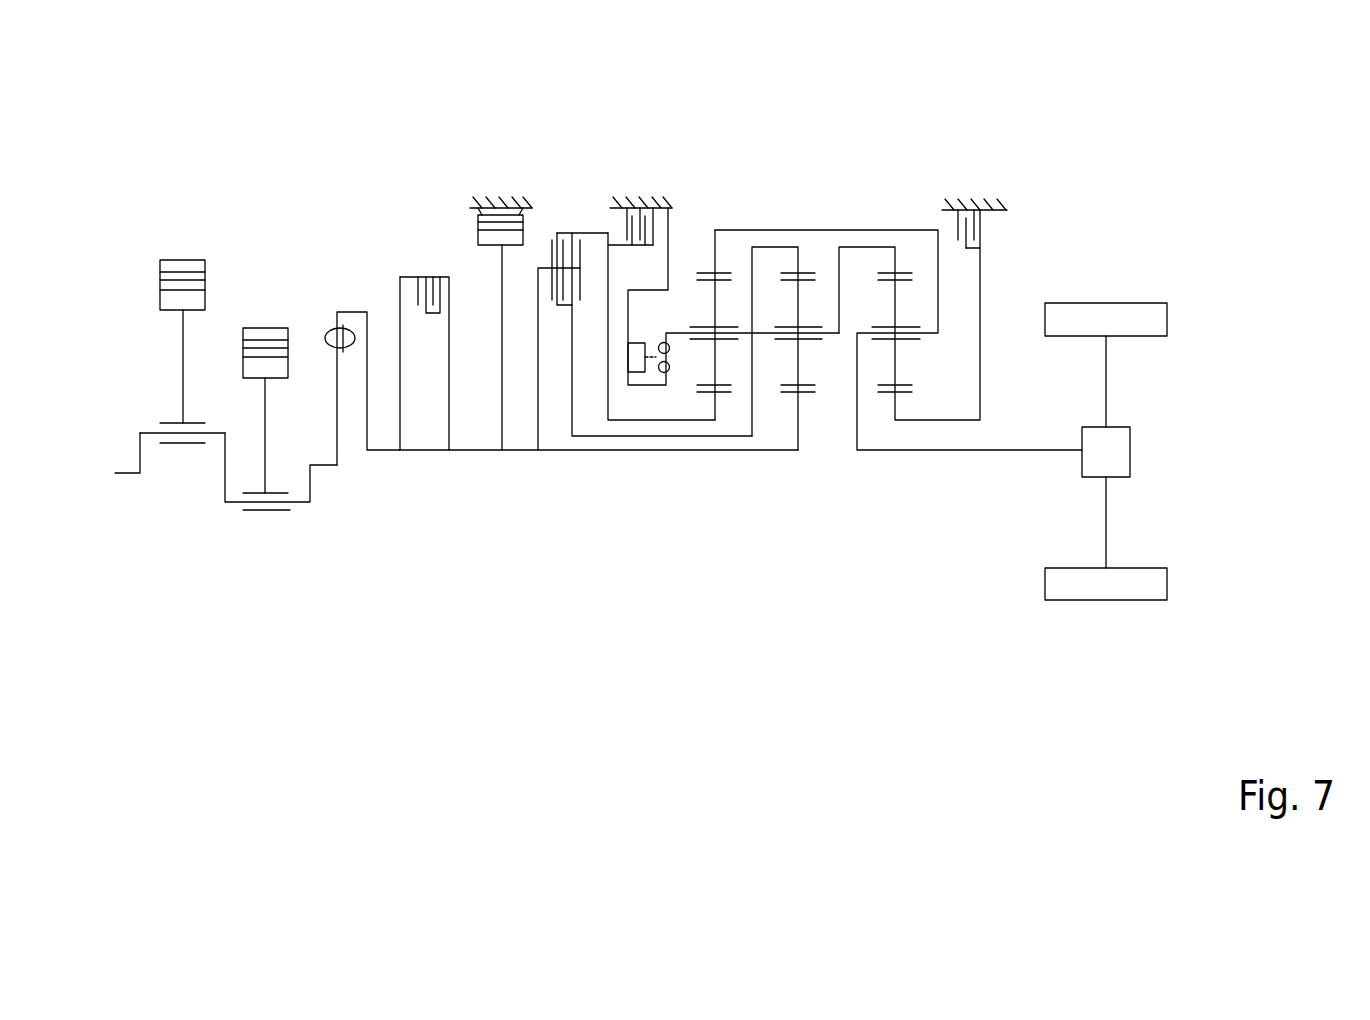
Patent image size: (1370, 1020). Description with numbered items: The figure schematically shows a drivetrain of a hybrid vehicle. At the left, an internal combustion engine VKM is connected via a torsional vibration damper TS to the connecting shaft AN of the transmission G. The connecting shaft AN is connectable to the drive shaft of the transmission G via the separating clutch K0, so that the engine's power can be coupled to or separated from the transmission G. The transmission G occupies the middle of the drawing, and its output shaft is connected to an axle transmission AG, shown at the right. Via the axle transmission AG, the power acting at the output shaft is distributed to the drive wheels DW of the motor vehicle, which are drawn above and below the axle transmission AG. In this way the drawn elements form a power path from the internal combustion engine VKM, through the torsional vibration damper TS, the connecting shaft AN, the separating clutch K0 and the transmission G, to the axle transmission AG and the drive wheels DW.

The internal combustion engine VKM is at (270, 556).
The torsional vibration damper TS is at (335, 298).
The separating clutch K0 is at (434, 270).
The connecting shaft AN is at (383, 455).
The transmission G is at (653, 525).
The axle transmission AG is at (1130, 442).
The drive wheels DW is at (1150, 303).